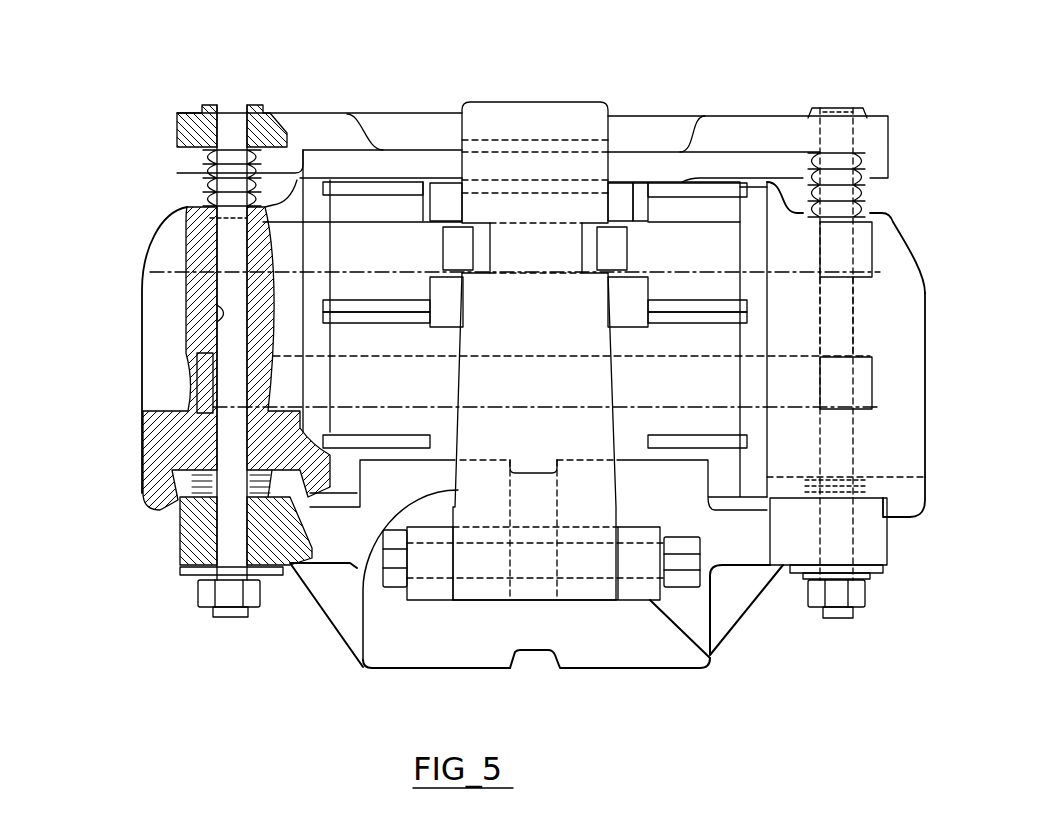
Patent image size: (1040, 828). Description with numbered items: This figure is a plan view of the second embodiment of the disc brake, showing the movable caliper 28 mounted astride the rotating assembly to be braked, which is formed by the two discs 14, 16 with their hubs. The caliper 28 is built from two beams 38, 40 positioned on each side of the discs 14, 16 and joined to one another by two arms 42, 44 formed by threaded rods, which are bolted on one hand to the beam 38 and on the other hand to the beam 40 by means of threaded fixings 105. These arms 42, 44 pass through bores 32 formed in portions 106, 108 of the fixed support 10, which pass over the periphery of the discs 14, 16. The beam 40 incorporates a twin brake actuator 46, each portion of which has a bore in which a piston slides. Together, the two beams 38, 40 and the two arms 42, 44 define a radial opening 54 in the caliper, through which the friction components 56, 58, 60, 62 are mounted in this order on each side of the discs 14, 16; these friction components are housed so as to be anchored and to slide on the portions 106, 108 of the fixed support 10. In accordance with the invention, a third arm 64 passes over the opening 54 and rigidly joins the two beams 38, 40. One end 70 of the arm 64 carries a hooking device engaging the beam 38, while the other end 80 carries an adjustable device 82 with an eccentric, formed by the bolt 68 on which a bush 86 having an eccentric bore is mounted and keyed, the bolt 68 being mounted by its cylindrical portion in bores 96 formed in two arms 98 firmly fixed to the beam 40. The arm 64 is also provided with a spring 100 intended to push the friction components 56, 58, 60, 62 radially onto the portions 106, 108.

The fixed support 10 is at (163, 457).
The disc 14 is at (867, 395).
The disc 16 is at (862, 250).
The caliper 28 is at (767, 621).
The bore 32 is at (193, 323).
The beam 38 is at (733, 130).
The beam 40 is at (425, 657).
The arm 42 is at (230, 332).
The arm 44 is at (857, 320).
The twin brake actuator 46 is at (496, 681).
The radial opening 54 is at (695, 226).
The friction component 56 is at (830, 478).
The friction component 58 is at (720, 342).
The friction component 60 is at (727, 287).
The friction component 62 is at (867, 223).
The third arm 64 is at (545, 253).
The bolt 68 is at (370, 668).
The end of the arm 70 is at (502, 128).
The end of the arm 80 is at (343, 617).
The adjustable device 82 is at (540, 612).
The bush 86 is at (567, 537).
The bore 96 is at (635, 540).
The arm 98 is at (422, 588).
The spring 100 is at (440, 387).
The threaded fixing 105 is at (192, 108).
The portion of the fixed support 106 is at (175, 290).
The portion of the fixed support 108 is at (900, 382).